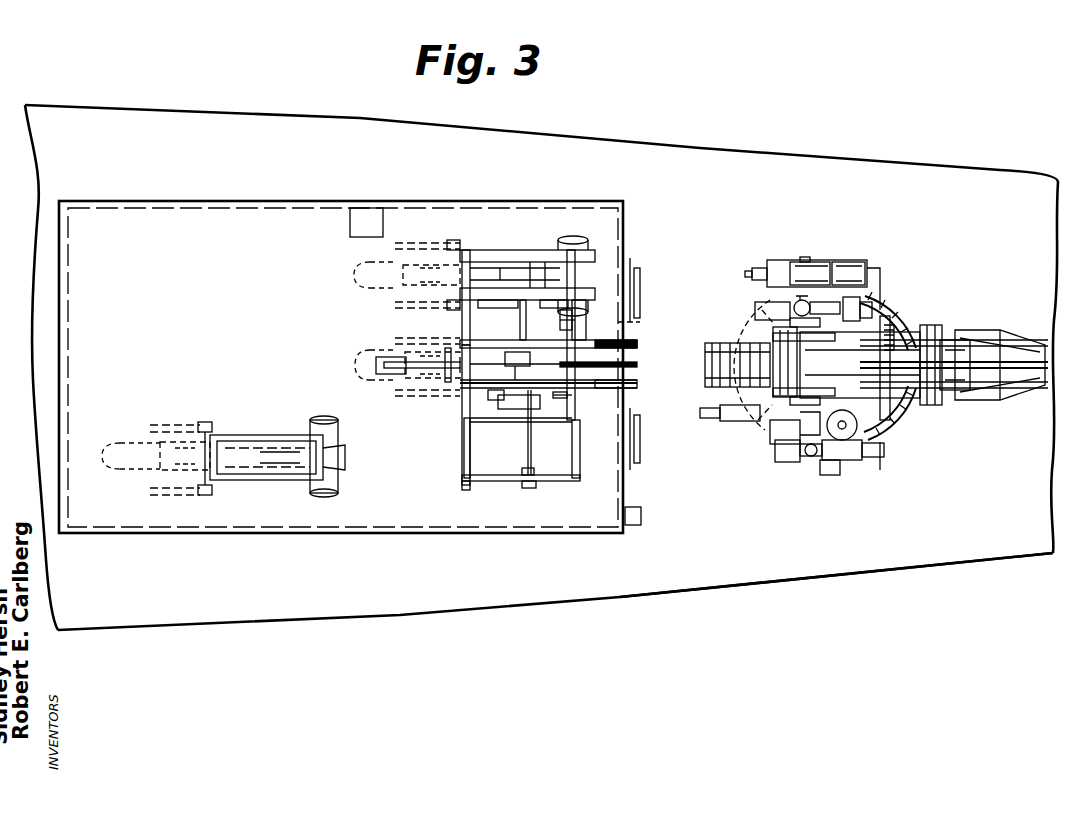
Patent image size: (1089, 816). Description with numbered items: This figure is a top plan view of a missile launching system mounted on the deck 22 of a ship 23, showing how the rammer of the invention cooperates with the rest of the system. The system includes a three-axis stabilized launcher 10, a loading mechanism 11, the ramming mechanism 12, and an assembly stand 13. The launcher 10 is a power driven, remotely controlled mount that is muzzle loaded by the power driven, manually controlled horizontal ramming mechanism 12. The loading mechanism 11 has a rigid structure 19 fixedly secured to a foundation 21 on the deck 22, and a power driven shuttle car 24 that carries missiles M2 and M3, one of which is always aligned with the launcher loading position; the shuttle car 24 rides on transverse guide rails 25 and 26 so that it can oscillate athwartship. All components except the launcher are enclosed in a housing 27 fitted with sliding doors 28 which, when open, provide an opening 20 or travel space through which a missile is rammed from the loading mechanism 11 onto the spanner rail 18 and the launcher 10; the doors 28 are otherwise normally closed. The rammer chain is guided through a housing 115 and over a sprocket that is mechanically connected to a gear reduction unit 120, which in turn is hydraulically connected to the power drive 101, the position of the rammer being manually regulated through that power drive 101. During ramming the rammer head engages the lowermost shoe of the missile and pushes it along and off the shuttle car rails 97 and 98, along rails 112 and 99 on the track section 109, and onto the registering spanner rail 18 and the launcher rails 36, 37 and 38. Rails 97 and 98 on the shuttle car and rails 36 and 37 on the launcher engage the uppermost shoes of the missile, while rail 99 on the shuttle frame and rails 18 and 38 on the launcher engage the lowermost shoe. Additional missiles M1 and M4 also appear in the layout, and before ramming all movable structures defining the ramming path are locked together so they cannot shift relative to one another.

The three-axis stabilized launcher 10 is at (917, 289).
The loading mechanism 11 is at (511, 490).
The ramming mechanism 12 is at (396, 386).
The assembly stand 13 is at (285, 425).
The spanner rail 18 is at (1006, 382).
The rigid structure 19 is at (462, 436).
The opening 20 is at (627, 327).
The foundation 21 is at (415, 512).
The deck 22 is at (917, 508).
The ship 23 is at (765, 574).
The shuttle car 24 is at (586, 321).
The transverse guide rail 25 is at (462, 463).
The transverse guide rail 26 is at (580, 463).
The housing 27 is at (296, 206).
The sliding doors 28 is at (641, 292).
The launcher rail 36 is at (976, 344).
The launcher rail 37 is at (968, 390).
The launcher rail 38 is at (928, 372).
The shuttle car rail 97 is at (531, 252).
The shuttle car rail 98 is at (582, 304).
The rail 99 is at (638, 364).
The power drive 101 is at (520, 406).
The track section 109 is at (645, 386).
The rail 112 is at (638, 343).
The housing 115 is at (392, 362).
The gear reduction unit 120 is at (530, 350).
The motor M1 is at (1031, 388).
The missile M2 is at (358, 362).
The missile M3 is at (387, 283).
The motor M4 is at (140, 465).